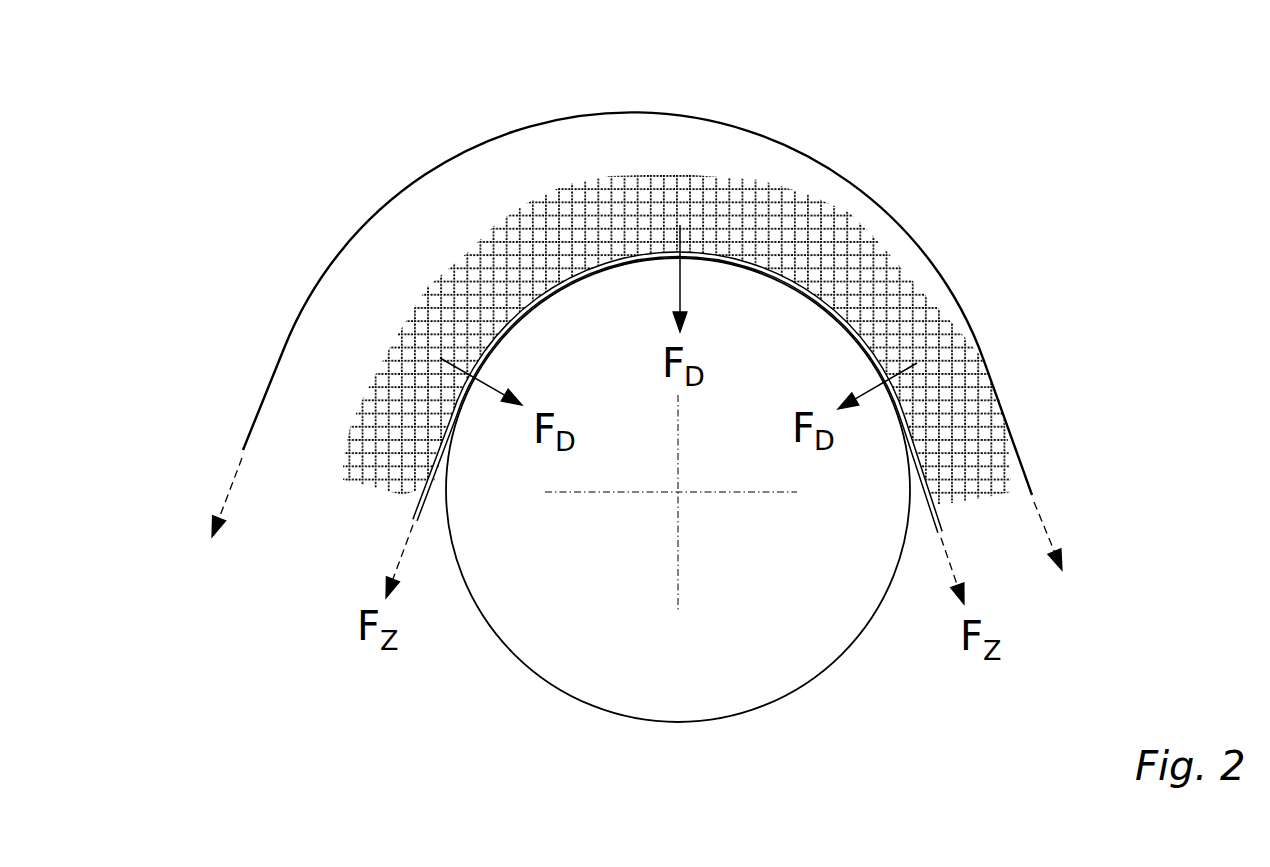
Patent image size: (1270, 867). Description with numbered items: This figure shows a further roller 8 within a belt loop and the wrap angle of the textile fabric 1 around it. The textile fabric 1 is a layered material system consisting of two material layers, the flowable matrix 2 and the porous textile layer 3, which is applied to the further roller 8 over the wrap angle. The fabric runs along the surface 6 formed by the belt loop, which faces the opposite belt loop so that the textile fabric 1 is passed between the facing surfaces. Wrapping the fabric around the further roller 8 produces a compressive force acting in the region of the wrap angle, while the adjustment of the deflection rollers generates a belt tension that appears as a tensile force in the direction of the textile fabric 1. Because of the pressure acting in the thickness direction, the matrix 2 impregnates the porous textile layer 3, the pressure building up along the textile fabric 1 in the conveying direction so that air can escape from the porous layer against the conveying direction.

The textile fabric 1 is at (336, 482).
The matrix 2 is at (383, 267).
The textile layer 3 is at (352, 388).
The surface 6 is at (250, 418).
The further roller 8 is at (780, 658).